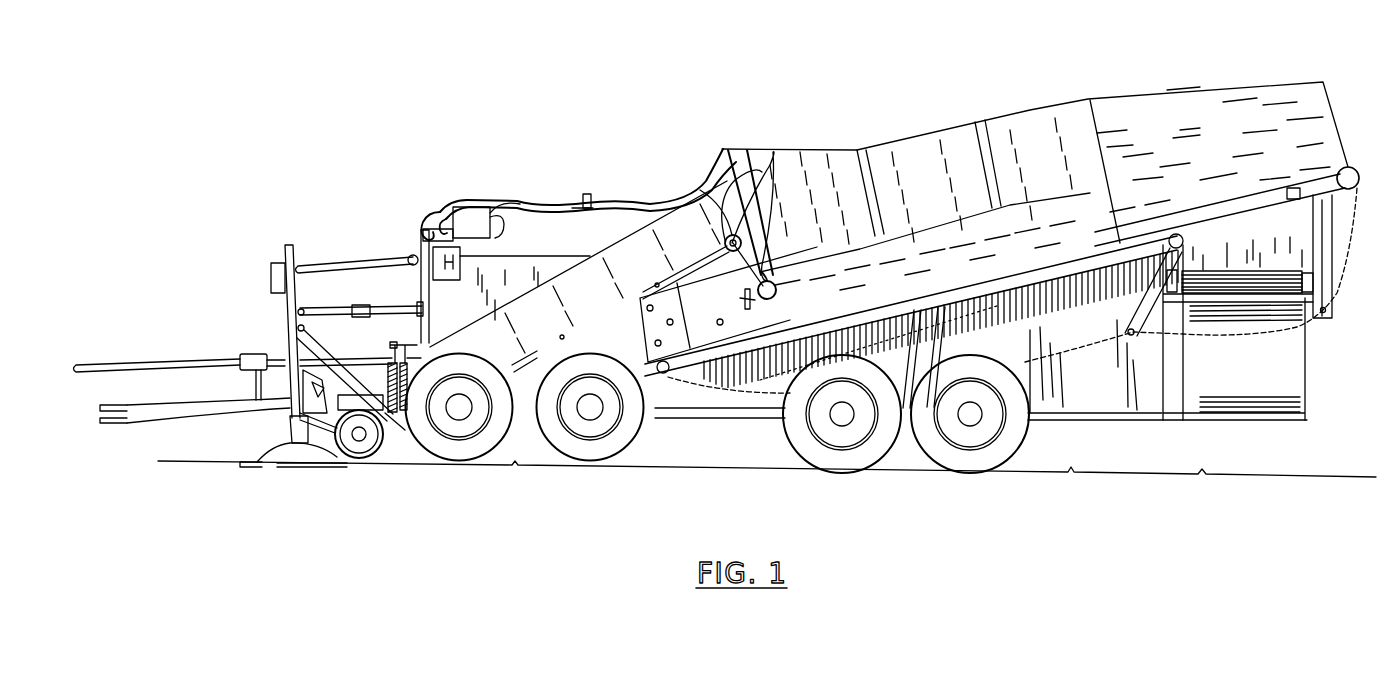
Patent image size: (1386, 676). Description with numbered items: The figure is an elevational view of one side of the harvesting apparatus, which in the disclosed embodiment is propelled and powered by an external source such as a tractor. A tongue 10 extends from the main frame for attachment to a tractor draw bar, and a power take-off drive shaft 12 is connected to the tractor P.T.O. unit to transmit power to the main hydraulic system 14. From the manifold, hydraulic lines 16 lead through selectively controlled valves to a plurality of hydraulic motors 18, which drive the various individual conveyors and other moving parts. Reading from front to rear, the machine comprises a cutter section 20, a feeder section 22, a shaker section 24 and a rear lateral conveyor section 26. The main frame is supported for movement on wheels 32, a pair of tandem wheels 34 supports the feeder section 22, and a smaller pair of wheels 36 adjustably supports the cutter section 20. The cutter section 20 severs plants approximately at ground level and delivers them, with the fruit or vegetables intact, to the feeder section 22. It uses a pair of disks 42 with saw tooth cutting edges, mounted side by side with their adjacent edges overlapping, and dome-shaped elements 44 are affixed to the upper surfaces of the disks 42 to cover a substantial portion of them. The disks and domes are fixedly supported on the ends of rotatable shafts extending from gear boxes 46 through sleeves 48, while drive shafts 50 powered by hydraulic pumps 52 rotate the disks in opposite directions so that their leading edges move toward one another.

The tongue 10 is at (197, 410).
The power take-off drive shaft 12 is at (203, 362).
The main hydraulic system 14 is at (487, 176).
The hydraulic lines 16 is at (443, 210).
The hydraulic motors 18 is at (725, 243).
The cutter section 20 is at (316, 316).
The feeder section 22 is at (516, 272).
The shaker section 24 is at (893, 137).
The rear lateral conveyor section 26 is at (1297, 255).
The wheels 32 is at (942, 453).
The tandem wheels 34 is at (566, 446).
The wheels 36 is at (370, 458).
The disks 42 is at (255, 468).
The dome-shaped elements 44 is at (287, 453).
The gear boxes 46 is at (279, 278).
The sleeves 48 is at (282, 343).
The drive shafts 50 is at (353, 263).
The hydraulic pumps 52 is at (435, 262).